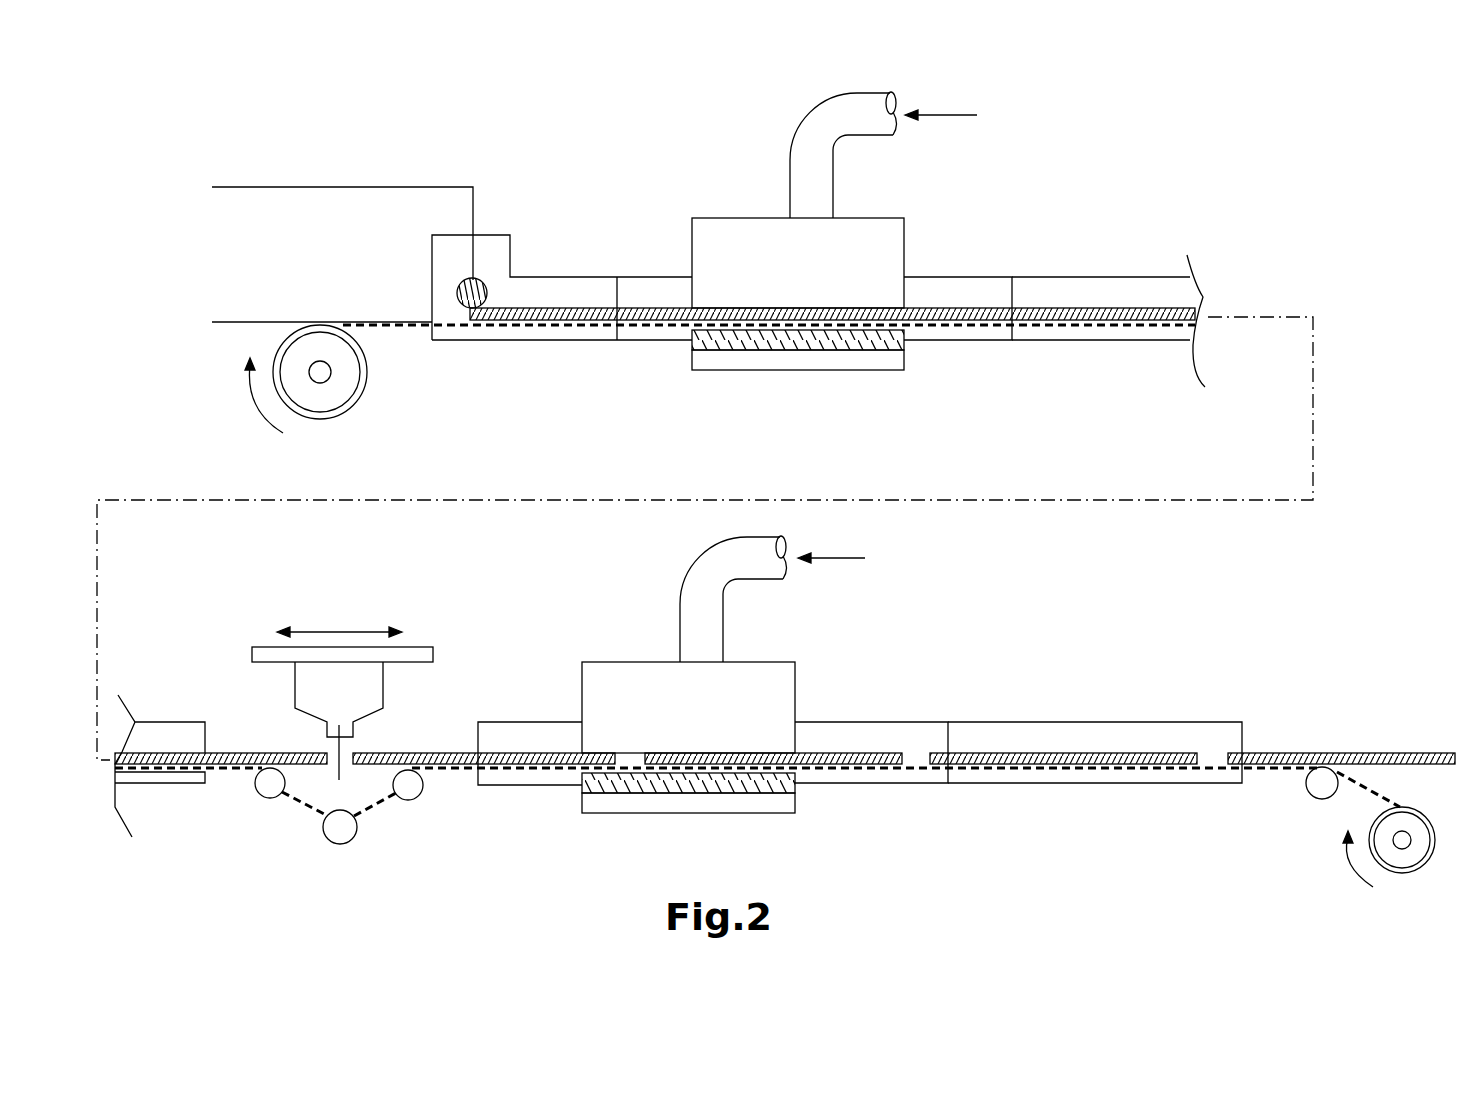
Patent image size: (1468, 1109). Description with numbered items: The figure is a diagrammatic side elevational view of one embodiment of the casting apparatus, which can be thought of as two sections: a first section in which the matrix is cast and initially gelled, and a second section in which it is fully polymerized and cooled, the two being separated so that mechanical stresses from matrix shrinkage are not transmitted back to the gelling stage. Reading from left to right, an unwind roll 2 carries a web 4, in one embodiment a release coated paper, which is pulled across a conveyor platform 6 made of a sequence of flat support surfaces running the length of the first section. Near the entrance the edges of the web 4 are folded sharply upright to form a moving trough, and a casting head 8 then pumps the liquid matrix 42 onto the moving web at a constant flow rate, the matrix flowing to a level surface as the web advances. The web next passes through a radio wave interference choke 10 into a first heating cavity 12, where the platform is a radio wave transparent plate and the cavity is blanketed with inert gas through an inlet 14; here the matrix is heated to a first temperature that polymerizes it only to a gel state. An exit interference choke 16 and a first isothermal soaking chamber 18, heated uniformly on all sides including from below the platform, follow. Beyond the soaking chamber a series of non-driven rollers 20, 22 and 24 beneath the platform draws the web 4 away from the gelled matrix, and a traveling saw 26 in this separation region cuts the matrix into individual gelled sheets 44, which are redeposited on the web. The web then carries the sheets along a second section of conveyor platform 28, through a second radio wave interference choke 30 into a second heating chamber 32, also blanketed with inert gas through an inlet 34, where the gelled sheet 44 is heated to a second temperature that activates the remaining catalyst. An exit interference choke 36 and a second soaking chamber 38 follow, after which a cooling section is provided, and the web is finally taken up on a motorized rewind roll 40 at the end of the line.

The unwind roll 2 is at (323, 397).
The web 4 is at (382, 327).
The conveyor platform 6 is at (467, 343).
The casting head 8 is at (483, 290).
The radio wave interference choke 10 is at (673, 244).
The first heating cavity 12 is at (817, 283).
The inlet 14 is at (817, 178).
The exit interference choke 16 is at (982, 277).
The first isothermal soaking chamber 18 is at (1138, 277).
The non-driven roller 20 is at (263, 782).
The non-driven roller 22 is at (343, 830).
The non-driven roller 24 is at (412, 787).
The traveling saw 26 is at (313, 677).
The second section of conveyor platform 28 is at (485, 792).
The second radio wave interference choke 30 is at (522, 722).
The second heating chamber 32 is at (642, 662).
The inlet 34 is at (698, 627).
The exit interference choke 36 is at (855, 720).
The second soaking chamber 38 is at (1110, 720).
The motorized rewind roll 40 is at (1403, 845).
The liquid matrix 42 is at (543, 325).
The gelled sheet 44 is at (427, 753).